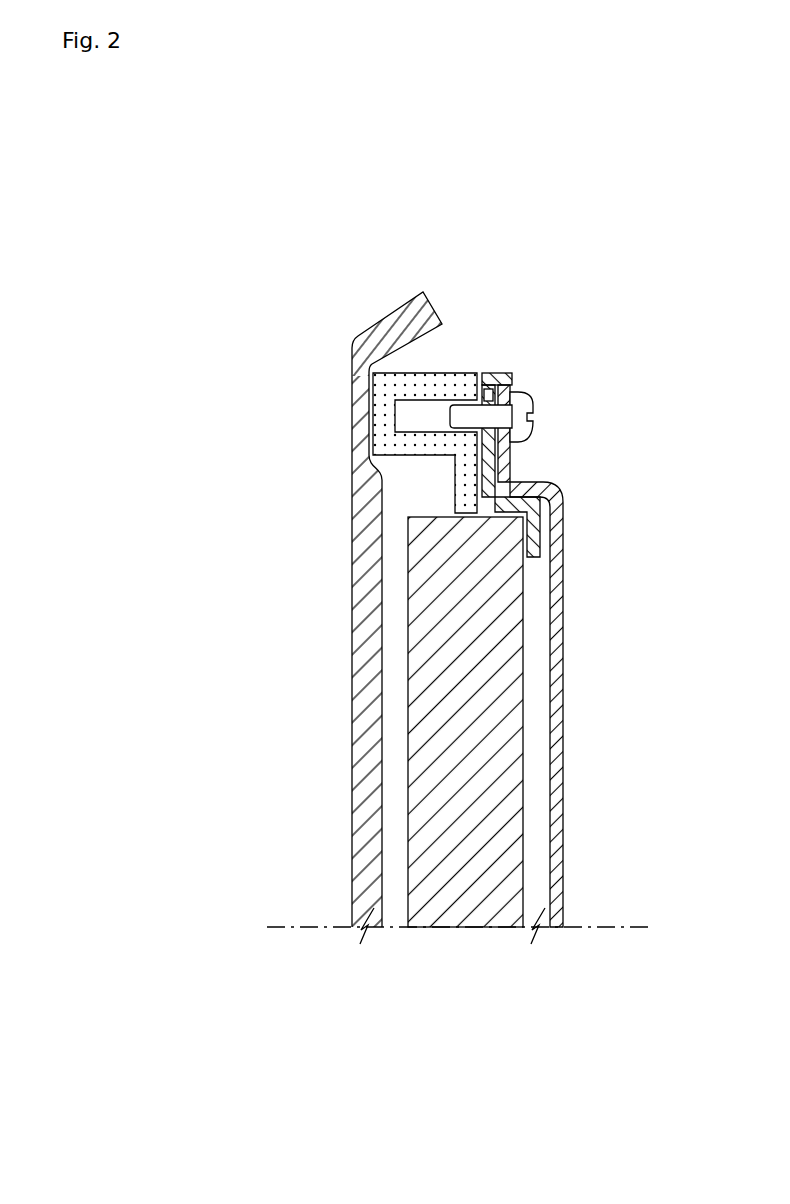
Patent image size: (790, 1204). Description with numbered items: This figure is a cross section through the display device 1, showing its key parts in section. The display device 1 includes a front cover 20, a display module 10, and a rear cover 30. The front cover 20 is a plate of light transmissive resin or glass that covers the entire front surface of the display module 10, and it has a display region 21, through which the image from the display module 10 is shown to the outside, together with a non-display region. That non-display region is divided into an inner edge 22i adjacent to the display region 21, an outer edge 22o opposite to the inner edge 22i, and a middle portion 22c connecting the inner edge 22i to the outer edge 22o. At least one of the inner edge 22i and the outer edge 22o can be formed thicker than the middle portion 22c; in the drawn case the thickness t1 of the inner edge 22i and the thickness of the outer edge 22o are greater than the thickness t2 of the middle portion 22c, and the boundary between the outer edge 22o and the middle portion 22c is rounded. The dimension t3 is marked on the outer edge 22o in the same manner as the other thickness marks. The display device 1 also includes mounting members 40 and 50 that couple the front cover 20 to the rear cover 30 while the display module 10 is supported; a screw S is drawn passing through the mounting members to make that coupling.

The display device 1 is at (272, 207).
The display module 10 is at (470, 887).
The front cover 20 is at (248, 320).
The display region 21 is at (352, 623).
The outer edge 22o is at (352, 362).
The middle portion 22c is at (412, 412).
The inner edge 22i is at (440, 503).
The rear cover 30 is at (565, 517).
The mounting member 40 is at (537, 545).
The mounting member 50 is at (467, 378).
The screw / bolt S is at (538, 426).
The thickness t1 is at (352, 483).
The thickness t2 is at (352, 384).
The thickness t3 of outer end portion t3 is at (433, 381).